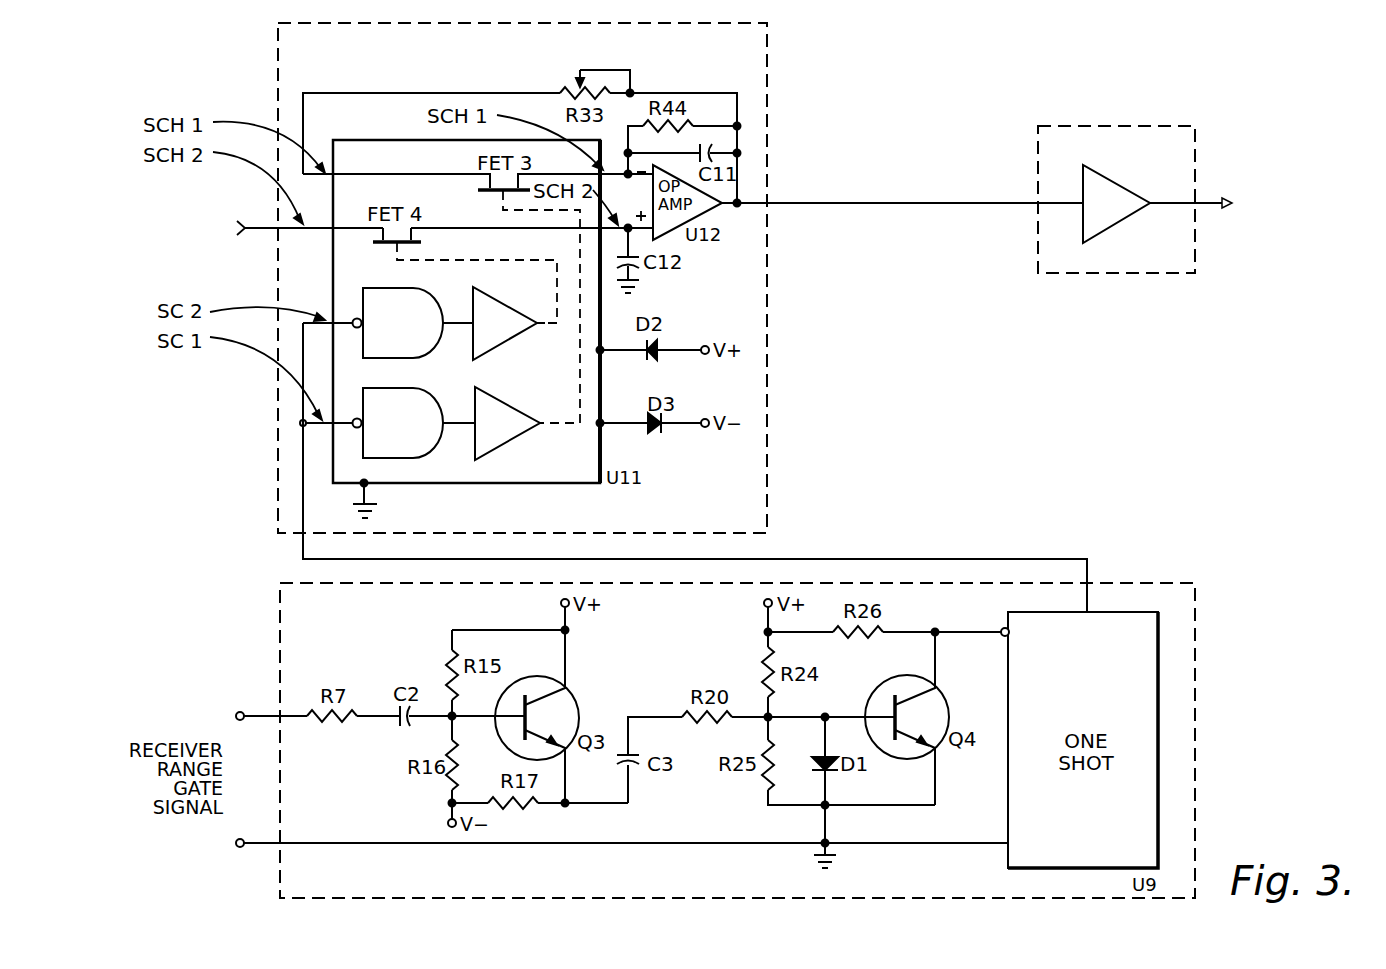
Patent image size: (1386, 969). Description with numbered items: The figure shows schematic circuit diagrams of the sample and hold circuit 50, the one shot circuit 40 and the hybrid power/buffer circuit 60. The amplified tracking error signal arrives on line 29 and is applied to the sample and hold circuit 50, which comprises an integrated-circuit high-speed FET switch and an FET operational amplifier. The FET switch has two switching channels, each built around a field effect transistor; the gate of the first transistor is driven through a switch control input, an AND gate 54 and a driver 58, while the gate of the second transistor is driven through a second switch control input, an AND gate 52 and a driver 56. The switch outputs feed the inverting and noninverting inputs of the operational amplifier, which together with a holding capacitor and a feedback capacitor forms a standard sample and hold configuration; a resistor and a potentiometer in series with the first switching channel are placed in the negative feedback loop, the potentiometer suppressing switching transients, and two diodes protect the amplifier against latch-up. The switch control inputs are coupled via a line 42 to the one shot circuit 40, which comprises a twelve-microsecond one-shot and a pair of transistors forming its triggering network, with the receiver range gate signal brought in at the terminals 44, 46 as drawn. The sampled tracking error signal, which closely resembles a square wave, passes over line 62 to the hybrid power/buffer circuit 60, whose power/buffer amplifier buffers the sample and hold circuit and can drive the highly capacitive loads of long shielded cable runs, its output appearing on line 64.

The line 29 is at (268, 232).
The one shot circuit 40 is at (1147, 582).
The line 42 is at (967, 559).
The receiver range gate signal input terminal 44 is at (262, 714).
The receiver range gate signal return terminal 46 is at (268, 845).
The sample and hold circuit 50 is at (767, 90).
The AND gate 52 is at (398, 323).
The AND gate 54 is at (398, 423).
The driver 56 is at (505, 323).
The driver 58 is at (507, 423).
The hybrid power/buffer circuit 60 is at (1105, 126).
The line 62 is at (873, 203).
The line 64 is at (1205, 198).